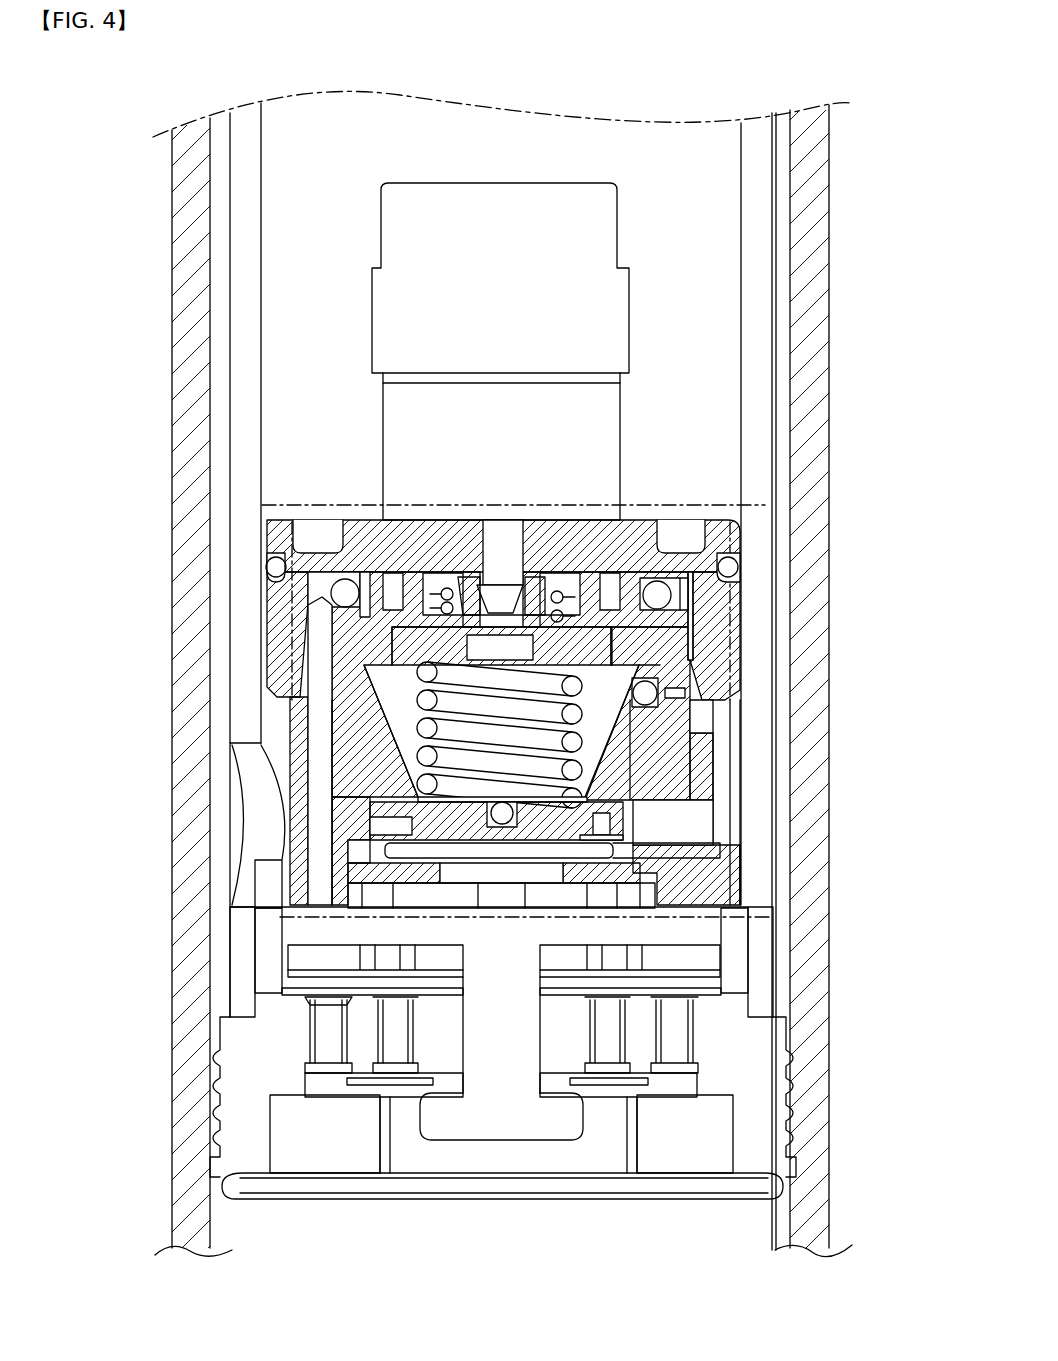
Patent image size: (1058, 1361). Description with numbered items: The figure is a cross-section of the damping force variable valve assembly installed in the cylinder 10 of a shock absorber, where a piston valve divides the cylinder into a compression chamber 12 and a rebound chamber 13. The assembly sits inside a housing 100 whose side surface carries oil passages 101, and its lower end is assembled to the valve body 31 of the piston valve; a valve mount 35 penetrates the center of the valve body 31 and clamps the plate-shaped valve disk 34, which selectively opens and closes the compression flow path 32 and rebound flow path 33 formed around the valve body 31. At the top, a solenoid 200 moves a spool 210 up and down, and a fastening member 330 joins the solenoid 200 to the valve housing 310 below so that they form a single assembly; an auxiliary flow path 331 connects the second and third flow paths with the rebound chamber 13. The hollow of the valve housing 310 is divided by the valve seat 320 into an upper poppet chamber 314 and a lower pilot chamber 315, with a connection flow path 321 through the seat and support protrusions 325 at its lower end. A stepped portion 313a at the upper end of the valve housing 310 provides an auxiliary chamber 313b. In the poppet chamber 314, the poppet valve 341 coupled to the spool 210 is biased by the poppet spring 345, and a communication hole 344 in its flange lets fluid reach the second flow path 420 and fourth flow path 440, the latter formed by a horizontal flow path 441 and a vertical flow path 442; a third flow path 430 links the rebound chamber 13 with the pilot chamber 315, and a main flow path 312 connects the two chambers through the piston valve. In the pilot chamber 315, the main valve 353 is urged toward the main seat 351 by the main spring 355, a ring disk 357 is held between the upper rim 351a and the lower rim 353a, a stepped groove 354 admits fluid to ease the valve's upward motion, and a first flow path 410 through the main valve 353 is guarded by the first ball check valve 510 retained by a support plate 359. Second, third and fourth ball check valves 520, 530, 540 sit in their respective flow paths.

The cylinder 10 is at (818, 214).
The compression chamber 12 is at (690, 1238).
The rebound chamber 13 is at (786, 167).
The valve body 31 is at (246, 1185).
The compression flow path 32 is at (658, 1040).
The rebound flow path 33 is at (600, 1035).
The valve disk 34 is at (405, 1000).
The valve mount 35 is at (490, 1120).
The housing 100 is at (758, 277).
The oil passage 101 is at (752, 880).
The solenoid 200 is at (432, 205).
The spool 210 is at (507, 520).
The valve housing 310 is at (700, 905).
The main flow path 312 is at (676, 820).
The stepped portion 313a is at (418, 582).
The auxiliary chamber 313b is at (385, 590).
The poppet chamber 314 is at (650, 630).
The pilot chamber 315 is at (692, 745).
The valve seat 320 is at (392, 645).
The connection flow path 321 is at (470, 652).
The support protrusion 325 is at (392, 672).
The fastening member 330 is at (745, 522).
The auxiliary flow path 331 is at (700, 612).
The poppet valve 341 is at (478, 578).
The communication hole 344 is at (568, 578).
The poppet spring 345 is at (428, 570).
The main seat 351 is at (642, 890).
The upper rim 351a is at (692, 868).
The main valve 353 is at (382, 782).
The lower rim 353a is at (400, 836).
The stepped groove 354 is at (585, 800).
The main spring 355 is at (408, 722).
The ring disk 357 is at (622, 845).
The support plate 359 is at (497, 814).
The first flow path 410 is at (318, 950).
The second flow path 420 is at (690, 600).
The third flow path 430 is at (690, 700).
The fourth flow path 440 is at (90, 647).
The horizontal flow path 441 is at (340, 590).
The vertical flow path 442 is at (330, 604).
The first ball check valve 510 is at (345, 907).
The second ball check valve 520 is at (735, 560).
The third ball check valve 530 is at (650, 692).
The fourth ball check valve 540 is at (272, 565).